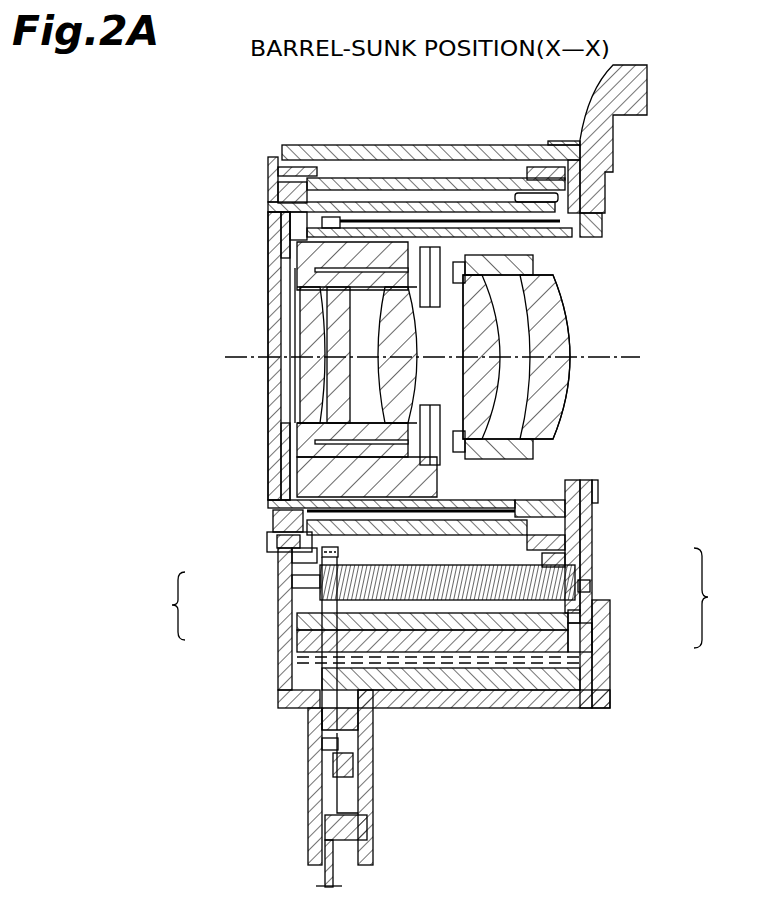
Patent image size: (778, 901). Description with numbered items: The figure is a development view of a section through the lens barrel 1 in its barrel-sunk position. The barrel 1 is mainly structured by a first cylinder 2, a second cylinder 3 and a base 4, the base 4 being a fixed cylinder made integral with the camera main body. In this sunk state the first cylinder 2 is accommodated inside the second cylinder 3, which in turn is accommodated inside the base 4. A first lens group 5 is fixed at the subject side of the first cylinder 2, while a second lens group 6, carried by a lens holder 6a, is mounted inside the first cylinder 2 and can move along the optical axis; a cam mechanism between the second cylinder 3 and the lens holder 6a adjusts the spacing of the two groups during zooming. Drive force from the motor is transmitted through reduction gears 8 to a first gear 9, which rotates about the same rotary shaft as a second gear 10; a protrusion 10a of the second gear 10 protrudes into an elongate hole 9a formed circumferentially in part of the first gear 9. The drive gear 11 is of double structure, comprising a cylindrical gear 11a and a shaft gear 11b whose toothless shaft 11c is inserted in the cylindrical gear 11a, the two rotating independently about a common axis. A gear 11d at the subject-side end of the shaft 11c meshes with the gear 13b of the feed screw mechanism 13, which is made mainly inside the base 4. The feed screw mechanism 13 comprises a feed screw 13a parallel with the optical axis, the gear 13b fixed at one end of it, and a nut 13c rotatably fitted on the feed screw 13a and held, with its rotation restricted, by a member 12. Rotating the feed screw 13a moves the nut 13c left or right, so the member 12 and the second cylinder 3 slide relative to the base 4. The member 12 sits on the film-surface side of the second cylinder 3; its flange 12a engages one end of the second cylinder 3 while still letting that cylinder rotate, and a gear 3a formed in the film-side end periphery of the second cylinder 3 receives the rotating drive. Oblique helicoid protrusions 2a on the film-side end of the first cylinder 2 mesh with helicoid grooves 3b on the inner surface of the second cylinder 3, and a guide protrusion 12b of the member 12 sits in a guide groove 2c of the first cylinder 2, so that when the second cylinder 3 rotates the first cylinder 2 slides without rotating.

The barrel 1 is at (222, 263).
The first cylinder 2 is at (285, 478).
The helicoid protrusions 2a is at (583, 225).
The guide groove 2c is at (395, 215).
The second cylinder 3 is at (427, 188).
The gear 3a is at (548, 173).
The helicoid grooves 3b is at (367, 195).
The base (fixed cylinder) 4 is at (462, 150).
The first lens group 5 is at (357, 340).
The second lens group 6 is at (513, 343).
The lens holder 6a is at (540, 265).
The reduction gears 8 is at (375, 826).
The first gear 9 is at (322, 723).
The elongate hole 9a is at (317, 770).
The second gear 10 is at (365, 735).
The protrusion 10a is at (315, 752).
The drive gear 11 is at (233, 619).
The cylindrical gear 11a is at (293, 600).
The shaft gear 11b is at (315, 612).
The shaft 11c is at (470, 640).
The gear 11d is at (330, 670).
The member 12 is at (530, 240).
The flange 12a is at (565, 207).
The guide protrusion 12b is at (312, 224).
The feed screw mechanism 13 is at (717, 598).
The feed screw 13a is at (580, 590).
The gear 13b is at (590, 640).
The nut 13c is at (557, 556).